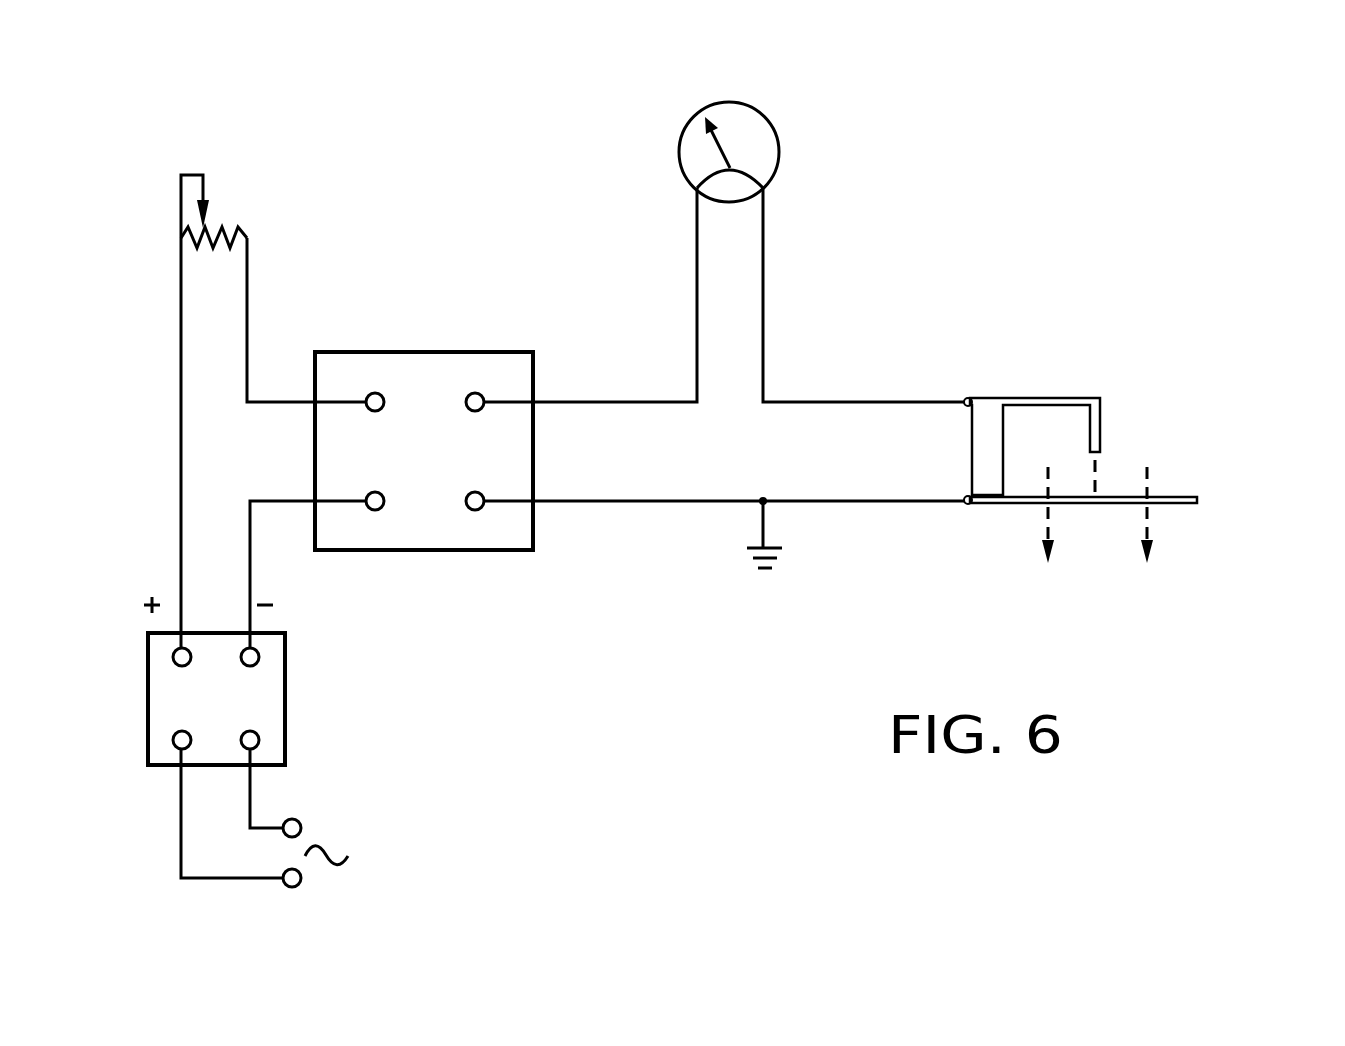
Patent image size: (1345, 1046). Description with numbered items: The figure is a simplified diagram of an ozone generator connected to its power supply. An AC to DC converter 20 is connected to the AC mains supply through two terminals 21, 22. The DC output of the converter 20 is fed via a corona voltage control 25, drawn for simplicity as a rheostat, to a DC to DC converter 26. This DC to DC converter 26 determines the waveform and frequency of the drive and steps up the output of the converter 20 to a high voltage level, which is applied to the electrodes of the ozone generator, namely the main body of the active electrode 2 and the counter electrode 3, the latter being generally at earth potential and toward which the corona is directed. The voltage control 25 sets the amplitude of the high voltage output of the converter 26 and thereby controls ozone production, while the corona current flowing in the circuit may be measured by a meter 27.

The main body of the active electrode 2 is at (1030, 395).
The counter electrode 3 is at (1170, 507).
The AC to DC converter 20 is at (285, 653).
The terminal 21 is at (287, 815).
The terminal 22 is at (302, 883).
The corona voltage control 25 is at (266, 207).
The DC to DC converter 26 is at (392, 550).
The meter 27 is at (780, 167).